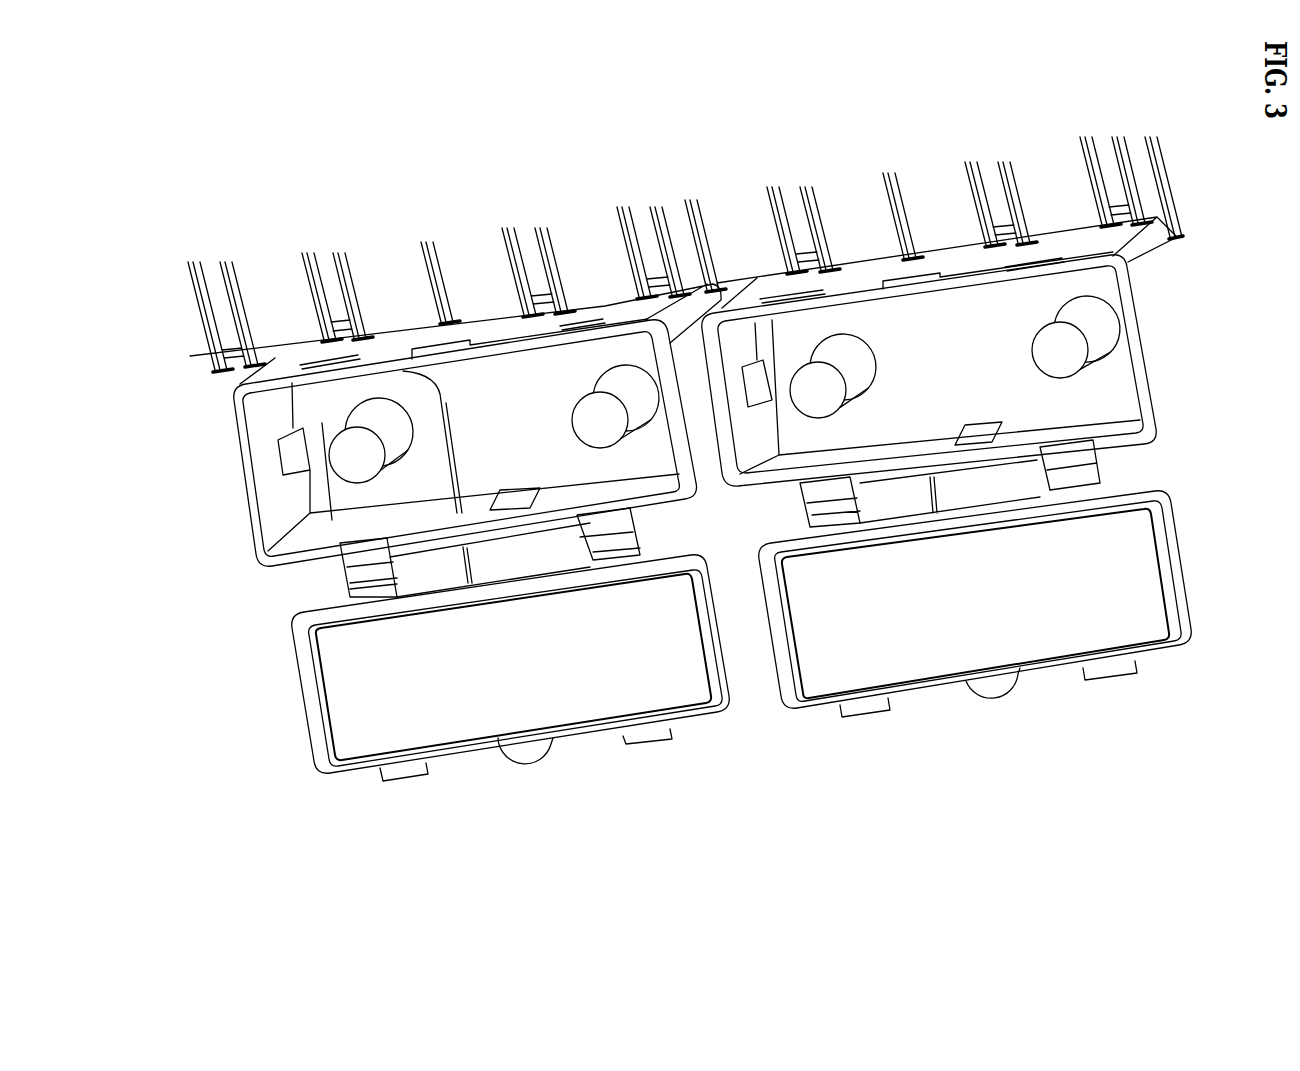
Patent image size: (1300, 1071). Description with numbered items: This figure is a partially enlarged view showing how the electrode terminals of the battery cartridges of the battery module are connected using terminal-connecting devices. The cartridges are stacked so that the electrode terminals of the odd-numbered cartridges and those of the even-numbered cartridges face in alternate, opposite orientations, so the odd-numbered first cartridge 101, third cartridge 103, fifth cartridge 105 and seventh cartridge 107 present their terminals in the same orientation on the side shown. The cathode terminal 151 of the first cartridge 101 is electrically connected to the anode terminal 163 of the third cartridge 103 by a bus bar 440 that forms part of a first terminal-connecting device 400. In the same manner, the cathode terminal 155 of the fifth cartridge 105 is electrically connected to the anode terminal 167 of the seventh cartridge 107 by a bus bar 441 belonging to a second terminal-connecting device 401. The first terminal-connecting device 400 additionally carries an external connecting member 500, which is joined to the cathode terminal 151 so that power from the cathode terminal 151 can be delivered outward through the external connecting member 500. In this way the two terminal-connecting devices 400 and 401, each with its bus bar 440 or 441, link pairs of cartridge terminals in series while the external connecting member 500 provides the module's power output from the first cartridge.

The first cartridge 101 is at (376, 258).
The third cartridge 103 is at (585, 240).
The fifth cartridge 105 is at (845, 207).
The seventh cartridge 107 is at (1043, 187).
The cathode terminal 151 is at (338, 463).
The cathode terminal 155 is at (823, 393).
The anode terminal 163 is at (608, 432).
The anode terminal 167 is at (1063, 367).
The first terminal-connecting device 400 is at (547, 796).
The second terminal-connecting device 401 is at (1062, 731).
The bus bar 440 is at (512, 475).
The bus bar 441 is at (957, 407).
The external connecting member 500 is at (343, 405).